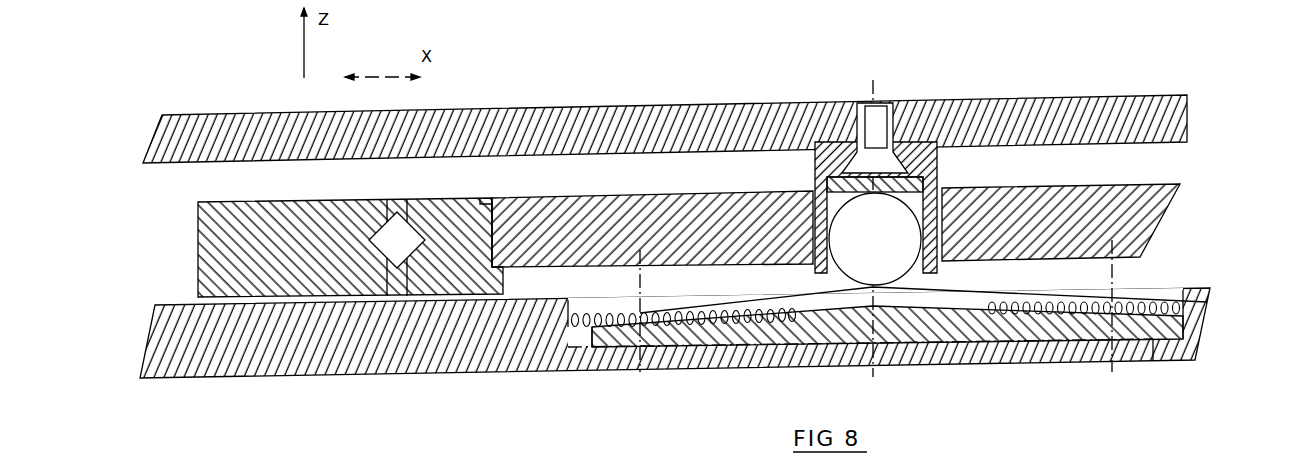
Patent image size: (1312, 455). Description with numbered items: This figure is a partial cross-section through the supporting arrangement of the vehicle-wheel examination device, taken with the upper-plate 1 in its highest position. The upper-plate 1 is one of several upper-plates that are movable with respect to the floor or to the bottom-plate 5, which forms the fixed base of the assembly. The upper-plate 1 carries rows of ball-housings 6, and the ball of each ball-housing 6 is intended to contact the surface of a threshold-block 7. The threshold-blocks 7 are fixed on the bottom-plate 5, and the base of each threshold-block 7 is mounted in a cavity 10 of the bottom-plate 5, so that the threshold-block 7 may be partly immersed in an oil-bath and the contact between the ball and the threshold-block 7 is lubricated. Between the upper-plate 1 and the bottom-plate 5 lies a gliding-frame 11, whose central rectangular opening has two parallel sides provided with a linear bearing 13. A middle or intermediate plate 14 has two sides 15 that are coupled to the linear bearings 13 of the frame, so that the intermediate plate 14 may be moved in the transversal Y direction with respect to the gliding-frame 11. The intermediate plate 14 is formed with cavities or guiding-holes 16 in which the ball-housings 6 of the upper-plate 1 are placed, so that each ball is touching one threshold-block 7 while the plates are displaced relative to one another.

The upper-plate 1 is at (681, 123).
The bottom-plate 5 is at (1146, 348).
The ball-housing 6 is at (825, 157).
The threshold-block 7 is at (942, 320).
The cavity 10 is at (1210, 303).
The gliding-frame 11 is at (337, 234).
The linear bearing 13 is at (397, 238).
The intermediate plate 14 is at (687, 242).
The side 15 is at (477, 232).
The guiding-hole 16 is at (939, 258).